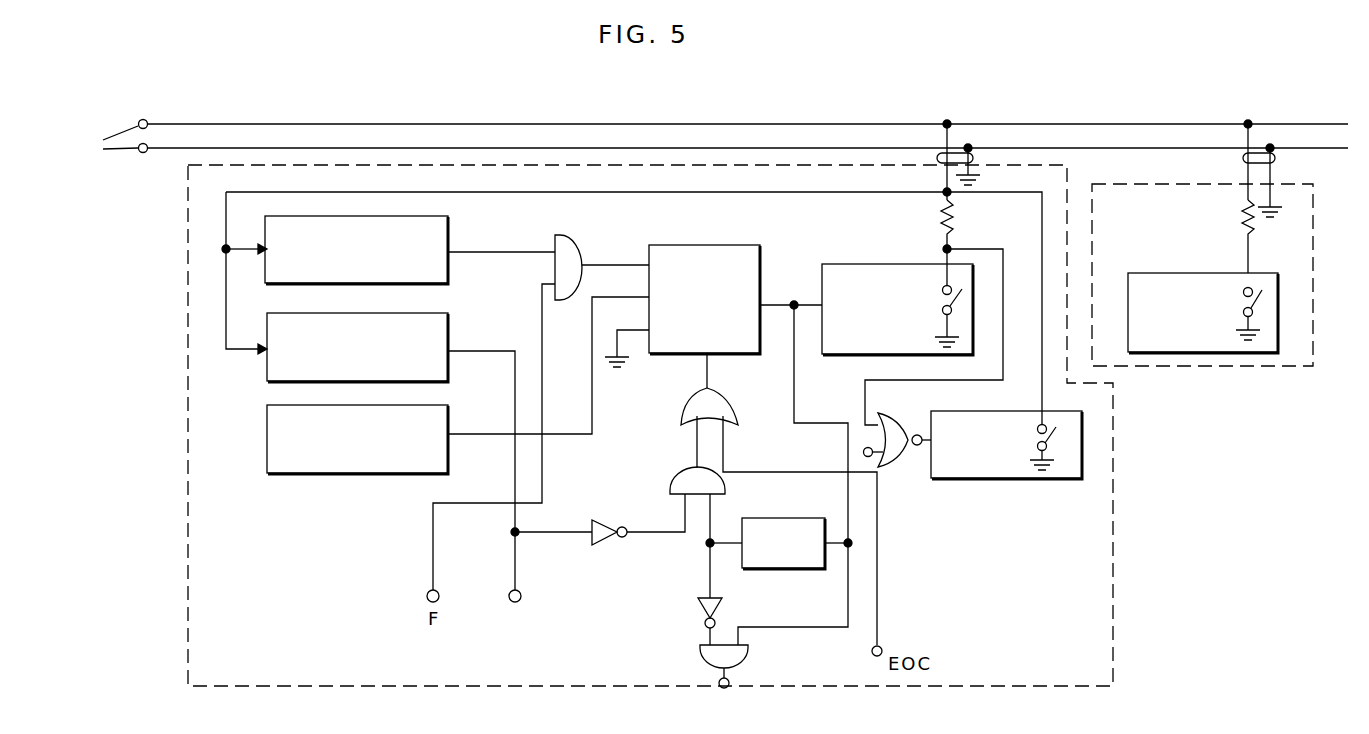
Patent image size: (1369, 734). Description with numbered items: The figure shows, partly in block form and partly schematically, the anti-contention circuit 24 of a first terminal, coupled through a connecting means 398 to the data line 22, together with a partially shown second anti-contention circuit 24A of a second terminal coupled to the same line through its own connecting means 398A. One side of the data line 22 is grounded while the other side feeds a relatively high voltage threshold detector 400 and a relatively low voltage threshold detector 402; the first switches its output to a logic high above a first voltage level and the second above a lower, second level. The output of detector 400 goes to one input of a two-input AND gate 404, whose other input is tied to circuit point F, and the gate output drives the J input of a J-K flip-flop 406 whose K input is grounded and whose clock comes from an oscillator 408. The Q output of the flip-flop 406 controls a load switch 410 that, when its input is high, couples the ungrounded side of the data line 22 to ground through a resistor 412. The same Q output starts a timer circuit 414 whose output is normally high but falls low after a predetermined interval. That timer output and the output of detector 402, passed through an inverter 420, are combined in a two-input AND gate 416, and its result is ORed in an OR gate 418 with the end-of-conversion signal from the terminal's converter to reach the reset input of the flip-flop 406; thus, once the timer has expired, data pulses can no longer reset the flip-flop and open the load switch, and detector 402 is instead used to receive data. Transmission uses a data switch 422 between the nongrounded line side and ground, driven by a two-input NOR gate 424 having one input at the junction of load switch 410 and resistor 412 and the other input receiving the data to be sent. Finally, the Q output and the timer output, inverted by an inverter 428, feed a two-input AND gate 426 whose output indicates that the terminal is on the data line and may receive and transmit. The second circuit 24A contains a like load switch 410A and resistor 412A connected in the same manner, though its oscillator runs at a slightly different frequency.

The data line 22 is at (110, 139).
The anti-contention circuit 24 is at (652, 650).
The second anti-contention circuit 24A is at (1175, 366).
The connecting means 398 is at (940, 156).
The connecting means 398A is at (1242, 158).
The high voltage threshold detector 400 is at (432, 217).
The low voltage threshold detector 402 is at (428, 314).
The AND gate 404 is at (578, 243).
The J-K flip-flop 406 is at (728, 250).
The oscillator 408 is at (267, 441).
The load switch 410 is at (900, 264).
The load switch 410A is at (1218, 275).
The resistor 412 is at (939, 211).
The resistor 412A is at (1242, 206).
The timer circuit 414 is at (762, 569).
The AND gate 416 is at (674, 478).
The OR gate 418 is at (684, 396).
The inverter 420 is at (616, 501).
The data switch 422 is at (983, 479).
The NOR gate 424 is at (880, 437).
The AND gate 426 is at (748, 656).
The inverter 428 is at (703, 608).